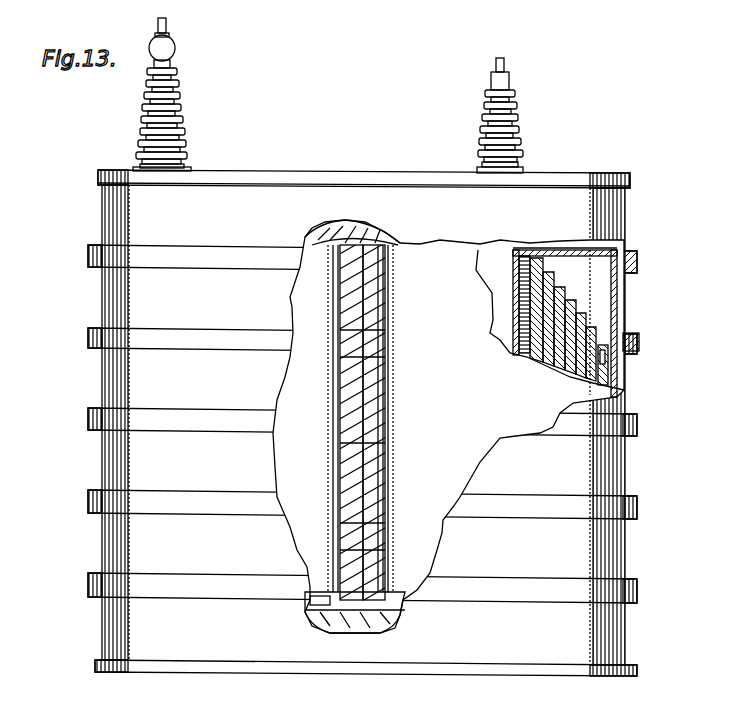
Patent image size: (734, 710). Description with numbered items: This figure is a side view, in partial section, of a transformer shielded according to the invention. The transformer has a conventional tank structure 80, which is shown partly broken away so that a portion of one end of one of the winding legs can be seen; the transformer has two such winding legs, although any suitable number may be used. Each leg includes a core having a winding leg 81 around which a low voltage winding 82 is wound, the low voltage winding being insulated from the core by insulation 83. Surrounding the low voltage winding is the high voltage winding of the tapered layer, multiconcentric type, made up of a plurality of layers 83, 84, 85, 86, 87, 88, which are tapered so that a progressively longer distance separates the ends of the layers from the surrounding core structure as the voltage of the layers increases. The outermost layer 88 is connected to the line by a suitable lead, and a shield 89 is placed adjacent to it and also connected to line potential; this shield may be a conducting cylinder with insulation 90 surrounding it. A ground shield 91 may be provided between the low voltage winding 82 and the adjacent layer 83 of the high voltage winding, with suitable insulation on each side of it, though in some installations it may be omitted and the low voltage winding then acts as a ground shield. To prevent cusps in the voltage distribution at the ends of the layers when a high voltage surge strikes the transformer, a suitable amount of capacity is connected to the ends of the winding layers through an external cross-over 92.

The tank structure 80 is at (623, 458).
The winding leg 81 is at (448, 426).
The low voltage winding 82 is at (518, 250).
The insulation 83 is at (517, 266).
The winding layer 84 is at (551, 288).
The winding layer 85 is at (562, 302).
The winding layer 86 is at (573, 316).
The winding layer 87 is at (584, 330).
The winding layer 88 is at (596, 345).
The shield 89 is at (605, 372).
The insulation 90 is at (640, 342).
The ground shield 91 is at (540, 252).
The external cross-over 92 is at (370, 310).